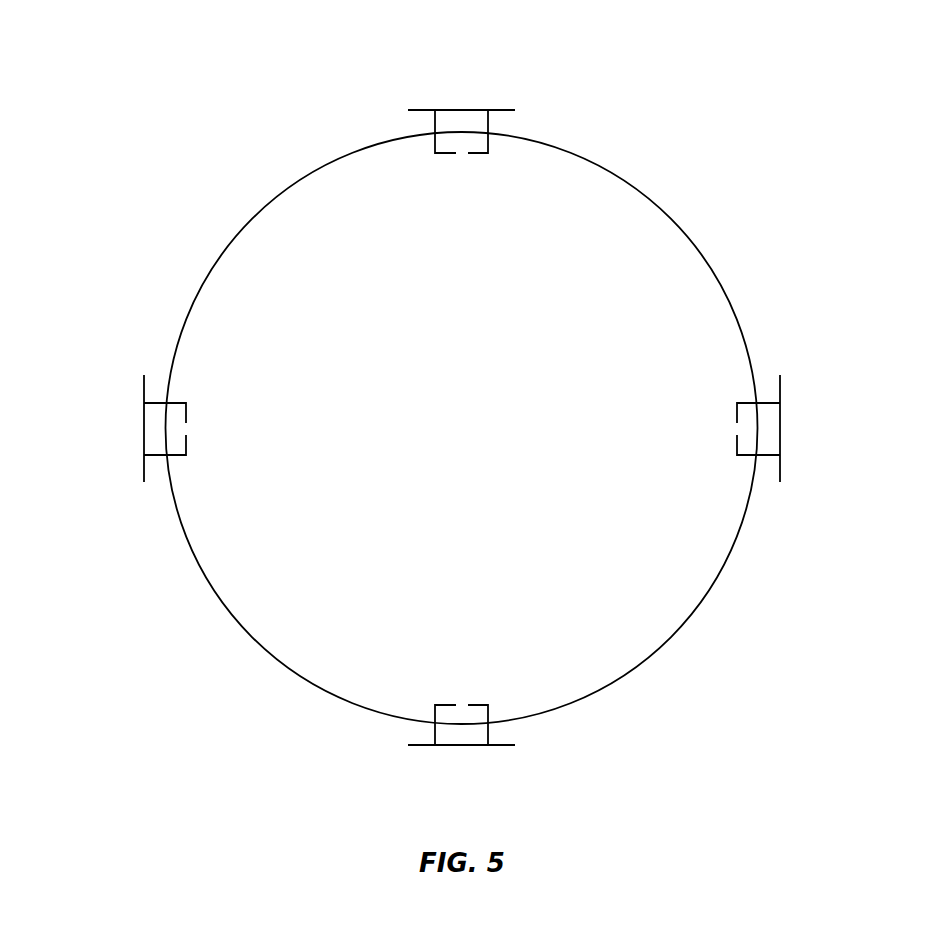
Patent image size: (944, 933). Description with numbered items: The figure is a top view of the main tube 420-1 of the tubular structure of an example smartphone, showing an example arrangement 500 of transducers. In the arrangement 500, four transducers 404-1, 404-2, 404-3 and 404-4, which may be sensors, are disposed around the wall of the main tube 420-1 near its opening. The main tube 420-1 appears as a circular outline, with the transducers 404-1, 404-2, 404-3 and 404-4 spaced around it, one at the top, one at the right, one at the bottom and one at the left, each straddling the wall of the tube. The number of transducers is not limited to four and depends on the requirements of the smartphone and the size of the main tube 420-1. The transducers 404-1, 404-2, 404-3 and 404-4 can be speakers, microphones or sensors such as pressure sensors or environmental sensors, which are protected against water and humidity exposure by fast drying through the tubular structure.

The arrangement 500 is at (119, 86).
The main tube 420-1 is at (692, 240).
The transducer 404-1 is at (460, 110).
The transducer 404-2 is at (780, 430).
The transducer 404-3 is at (463, 747).
The transducer 404-4 is at (143, 430).